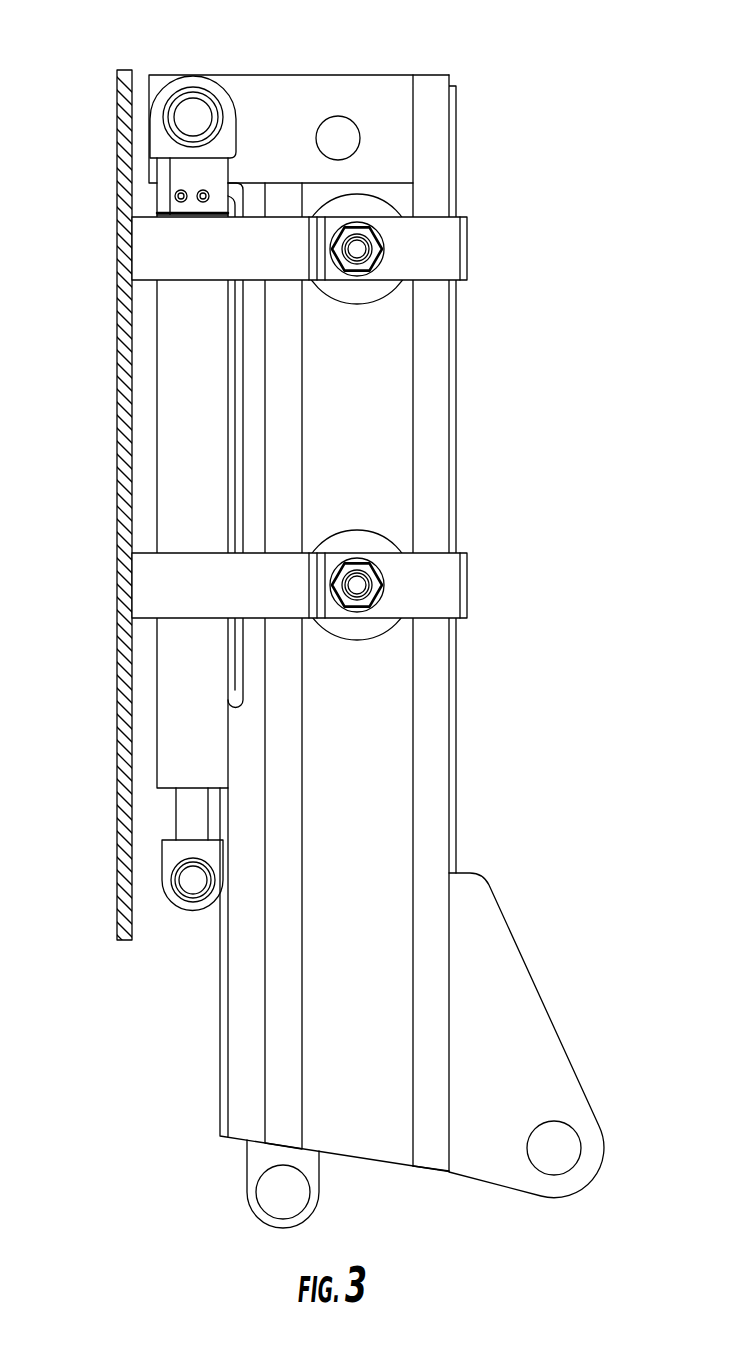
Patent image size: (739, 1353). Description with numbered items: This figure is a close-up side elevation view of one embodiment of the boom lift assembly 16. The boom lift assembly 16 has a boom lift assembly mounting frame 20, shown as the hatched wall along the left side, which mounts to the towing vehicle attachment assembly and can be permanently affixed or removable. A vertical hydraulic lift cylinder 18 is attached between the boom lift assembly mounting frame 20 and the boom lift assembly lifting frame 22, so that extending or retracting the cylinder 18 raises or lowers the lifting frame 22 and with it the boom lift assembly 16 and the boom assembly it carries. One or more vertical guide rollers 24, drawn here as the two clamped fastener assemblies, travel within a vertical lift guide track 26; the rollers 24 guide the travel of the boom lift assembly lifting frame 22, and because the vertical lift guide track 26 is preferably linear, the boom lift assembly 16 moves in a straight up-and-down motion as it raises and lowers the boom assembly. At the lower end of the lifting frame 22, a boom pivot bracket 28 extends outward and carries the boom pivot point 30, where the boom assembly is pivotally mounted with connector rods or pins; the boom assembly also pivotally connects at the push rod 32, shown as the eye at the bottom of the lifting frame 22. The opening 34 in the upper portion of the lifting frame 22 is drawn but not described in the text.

The boom lift assembly 16 is at (363, 52).
The vertical hydraulic lift cylinder 18 is at (163, 483).
The boom lift assembly mounting frame 20 is at (118, 700).
The boom lift assembly lifting frame 22 is at (264, 100).
The vertical guide roller 24 is at (375, 213).
The vertical lift guide track 26 is at (290, 473).
The boom pivot bracket 28 is at (563, 1073).
The boom pivot point 30 is at (560, 1163).
The push rod 32 is at (307, 1168).
The plate aperture 34 is at (343, 130).